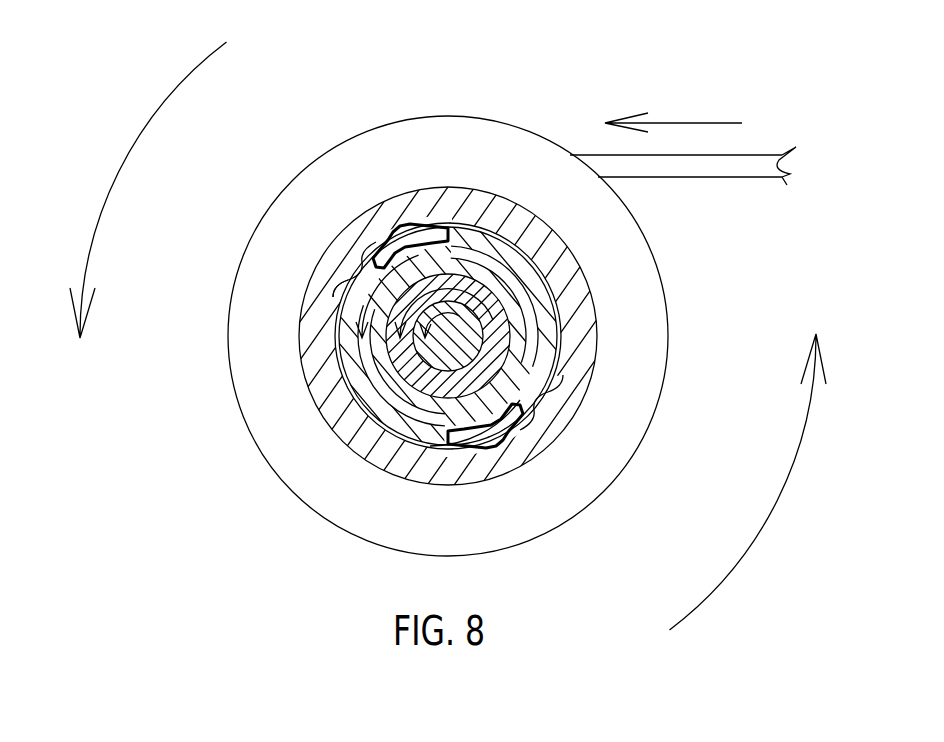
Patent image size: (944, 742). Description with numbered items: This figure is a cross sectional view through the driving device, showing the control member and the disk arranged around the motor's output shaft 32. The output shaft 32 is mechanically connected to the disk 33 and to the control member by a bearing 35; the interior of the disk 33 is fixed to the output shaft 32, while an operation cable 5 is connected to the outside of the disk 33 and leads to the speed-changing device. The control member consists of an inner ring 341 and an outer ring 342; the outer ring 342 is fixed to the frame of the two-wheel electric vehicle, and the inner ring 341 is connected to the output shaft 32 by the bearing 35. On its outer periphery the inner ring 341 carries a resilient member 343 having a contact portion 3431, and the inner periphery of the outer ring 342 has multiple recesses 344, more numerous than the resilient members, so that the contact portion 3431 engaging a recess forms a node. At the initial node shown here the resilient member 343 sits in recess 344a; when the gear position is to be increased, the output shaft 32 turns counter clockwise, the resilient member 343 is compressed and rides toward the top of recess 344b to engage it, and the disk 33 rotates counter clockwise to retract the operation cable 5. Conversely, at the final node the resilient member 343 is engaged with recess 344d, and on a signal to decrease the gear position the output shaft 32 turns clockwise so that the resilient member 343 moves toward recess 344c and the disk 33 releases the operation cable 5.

The operation cable 5 is at (747, 160).
The output shaft 32 is at (462, 358).
The disk 33 is at (618, 233).
The bearing 35 is at (500, 353).
The inner ring 341 is at (371, 398).
The outer ring 342 is at (582, 298).
The resilient member 343 is at (449, 437).
The contact portion 3431 is at (508, 415).
The recesses 344 is at (162, 208).
The recess 344a is at (394, 228).
The recess 344b is at (368, 242).
The recess 344c is at (350, 268).
The recess 344d is at (333, 295).